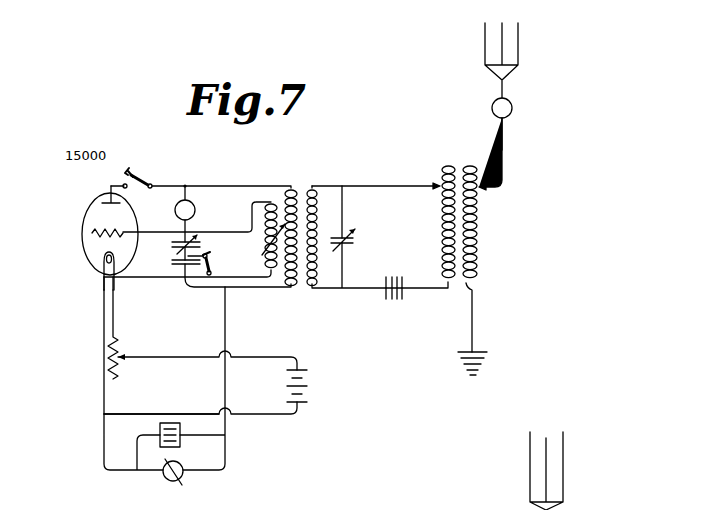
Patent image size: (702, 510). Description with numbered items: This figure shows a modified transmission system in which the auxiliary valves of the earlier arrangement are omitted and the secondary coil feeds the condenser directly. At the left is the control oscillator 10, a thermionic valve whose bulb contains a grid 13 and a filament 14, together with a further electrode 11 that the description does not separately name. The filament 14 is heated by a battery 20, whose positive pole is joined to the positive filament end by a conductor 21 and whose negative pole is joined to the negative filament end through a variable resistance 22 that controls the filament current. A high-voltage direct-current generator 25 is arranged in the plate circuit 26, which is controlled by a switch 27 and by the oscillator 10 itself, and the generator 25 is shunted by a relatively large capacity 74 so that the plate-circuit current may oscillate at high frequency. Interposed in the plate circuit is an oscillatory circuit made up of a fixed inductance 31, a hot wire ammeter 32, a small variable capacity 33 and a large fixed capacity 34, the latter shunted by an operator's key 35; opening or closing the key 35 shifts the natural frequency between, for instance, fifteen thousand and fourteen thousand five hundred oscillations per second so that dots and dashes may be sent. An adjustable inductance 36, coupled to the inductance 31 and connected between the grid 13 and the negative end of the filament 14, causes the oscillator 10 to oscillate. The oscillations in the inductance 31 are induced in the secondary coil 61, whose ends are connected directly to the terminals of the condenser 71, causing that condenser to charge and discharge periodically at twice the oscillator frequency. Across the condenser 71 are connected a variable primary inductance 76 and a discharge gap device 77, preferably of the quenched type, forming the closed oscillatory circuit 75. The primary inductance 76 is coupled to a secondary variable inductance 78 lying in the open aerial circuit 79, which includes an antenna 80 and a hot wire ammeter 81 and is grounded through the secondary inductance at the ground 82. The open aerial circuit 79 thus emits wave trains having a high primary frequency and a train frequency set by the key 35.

The control oscillator 10 is at (95, 230).
The grid 11 is at (82, 237).
The grid 13 is at (98, 238).
The filament 14 is at (103, 259).
The battery 20 is at (310, 388).
The conductor 21 is at (161, 403).
The variable resistance 22 is at (121, 362).
The generator 25 is at (174, 484).
The plate circuit 26 is at (185, 186).
The switch 27 is at (144, 172).
The fixed inductance 31 is at (288, 188).
The hot wire ammeter 32 is at (198, 216).
The variable capacity 33 is at (201, 244).
The fixed capacity 34 is at (172, 262).
The operator's key 35 is at (213, 267).
The adjustable inductance 36 is at (270, 222).
The secondary coil 61 is at (304, 242).
The condenser 71 is at (350, 241).
The capacity 74 is at (180, 431).
The oscillatory circuit 75 is at (399, 271).
The primary inductance 76 is at (442, 222).
The discharge gap device 77 is at (399, 306).
The secondary variable inductance 78 is at (477, 220).
The open aerial circuit 79 is at (518, 136).
The antenna 80 is at (504, 87).
The hot wire ammeter 81 is at (512, 111).
The ground 82 is at (472, 377).